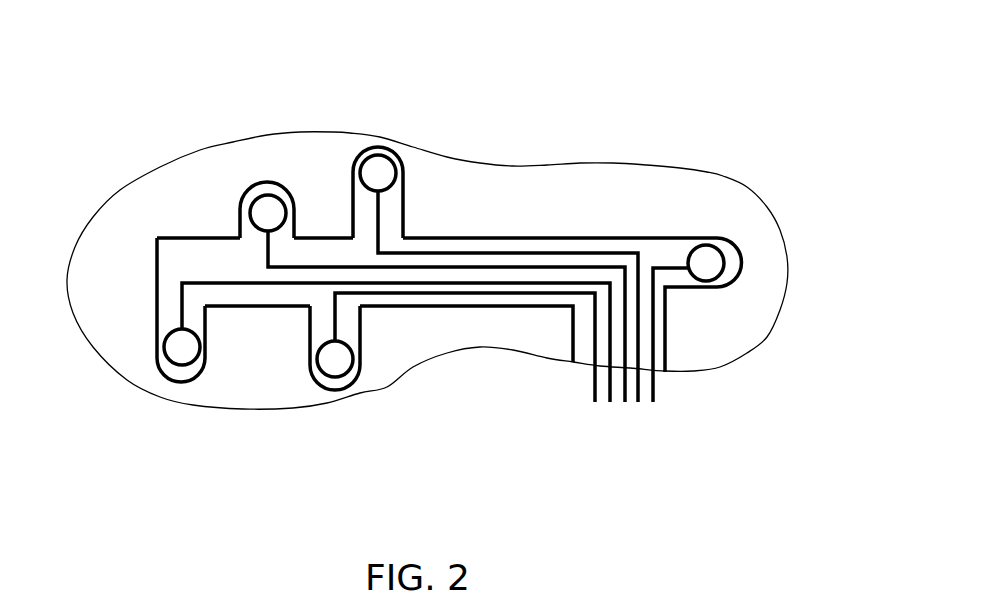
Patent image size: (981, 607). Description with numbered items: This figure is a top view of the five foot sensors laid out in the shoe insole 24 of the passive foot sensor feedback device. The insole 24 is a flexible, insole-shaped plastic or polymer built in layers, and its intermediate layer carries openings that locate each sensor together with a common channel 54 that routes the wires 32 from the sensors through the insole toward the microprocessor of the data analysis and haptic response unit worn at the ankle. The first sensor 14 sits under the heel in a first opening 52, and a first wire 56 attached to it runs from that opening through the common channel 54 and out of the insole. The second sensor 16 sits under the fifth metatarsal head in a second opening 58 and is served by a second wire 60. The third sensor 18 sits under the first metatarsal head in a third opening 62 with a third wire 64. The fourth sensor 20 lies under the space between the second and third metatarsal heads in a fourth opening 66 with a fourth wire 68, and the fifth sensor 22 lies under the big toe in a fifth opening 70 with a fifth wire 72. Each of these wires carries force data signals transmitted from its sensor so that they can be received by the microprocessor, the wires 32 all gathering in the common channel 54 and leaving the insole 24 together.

The insole 24 is at (783, 80).
The first sensor 14 is at (698, 258).
The second sensor 16 is at (379, 176).
The third sensor 18 is at (336, 362).
The fourth sensor 20 is at (266, 208).
The fifth sensor 22 is at (183, 351).
The wires 32 is at (633, 417).
The first opening 52 is at (711, 236).
The common channel 54 is at (542, 237).
The first wire 56 is at (674, 272).
The second opening 58 is at (402, 154).
The second wire 60 is at (371, 218).
The third opening 62 is at (309, 381).
The third wire 64 is at (337, 306).
The fourth opening 66 is at (233, 200).
The fourth wire 68 is at (323, 267).
The fifth opening 70 is at (152, 362).
The fifth wire 72 is at (243, 283).